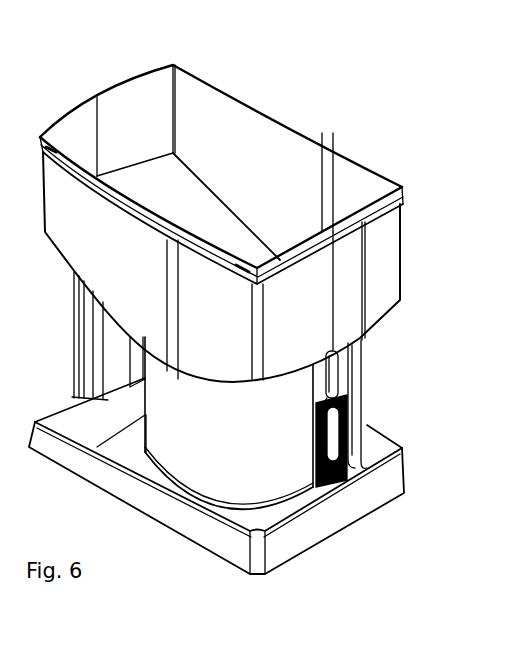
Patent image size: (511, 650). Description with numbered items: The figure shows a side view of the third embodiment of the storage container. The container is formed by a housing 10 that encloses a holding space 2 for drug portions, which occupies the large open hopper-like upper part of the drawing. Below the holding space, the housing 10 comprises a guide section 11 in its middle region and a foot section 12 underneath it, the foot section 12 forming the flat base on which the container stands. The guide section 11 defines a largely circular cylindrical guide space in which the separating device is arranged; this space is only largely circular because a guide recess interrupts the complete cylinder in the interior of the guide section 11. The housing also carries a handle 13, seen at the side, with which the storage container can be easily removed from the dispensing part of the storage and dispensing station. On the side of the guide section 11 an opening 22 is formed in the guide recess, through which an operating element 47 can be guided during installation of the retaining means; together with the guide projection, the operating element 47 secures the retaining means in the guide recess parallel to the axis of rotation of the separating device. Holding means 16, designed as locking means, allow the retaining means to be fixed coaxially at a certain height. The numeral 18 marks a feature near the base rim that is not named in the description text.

The holding space 2 is at (285, 158).
The housing 10 is at (370, 253).
The guide section 11 is at (250, 470).
The foot section 12 is at (408, 493).
The handle 13 is at (112, 366).
The holding means 16 is at (402, 448).
The base rim 18 is at (358, 478).
The opening 22 is at (338, 382).
The operating element 47 is at (342, 424).